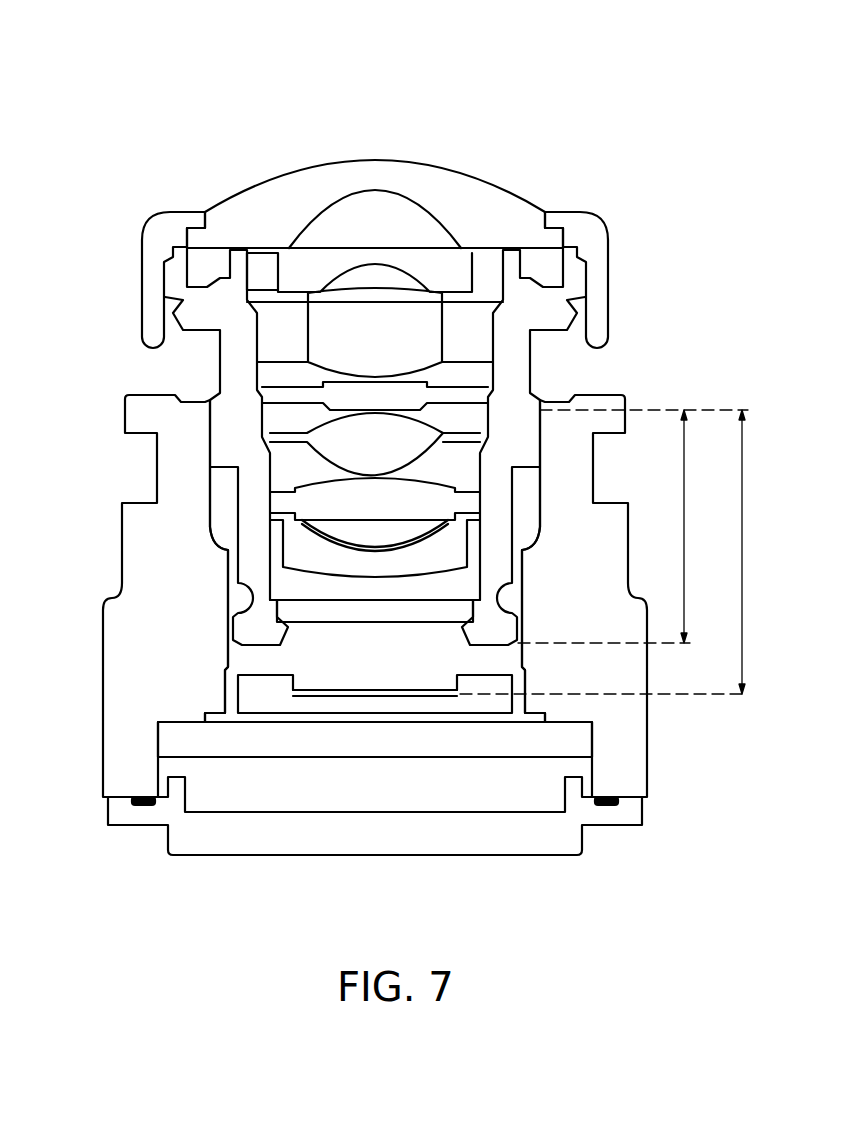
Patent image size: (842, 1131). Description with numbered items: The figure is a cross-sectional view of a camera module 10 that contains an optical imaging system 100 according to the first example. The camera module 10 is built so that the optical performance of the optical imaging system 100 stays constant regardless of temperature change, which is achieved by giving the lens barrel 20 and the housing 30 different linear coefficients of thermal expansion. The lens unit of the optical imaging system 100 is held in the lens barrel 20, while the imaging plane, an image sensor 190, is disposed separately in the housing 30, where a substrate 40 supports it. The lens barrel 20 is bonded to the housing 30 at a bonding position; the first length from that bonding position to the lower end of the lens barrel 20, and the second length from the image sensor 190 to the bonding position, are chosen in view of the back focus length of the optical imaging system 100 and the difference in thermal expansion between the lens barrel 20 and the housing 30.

The camera module 10 is at (306, 49).
The lens barrel 20 is at (163, 313).
The housing 30 is at (128, 533).
The substrate 40 is at (368, 707).
The optical imaging system 100 is at (373, 158).
The image sensor 190 is at (333, 690).